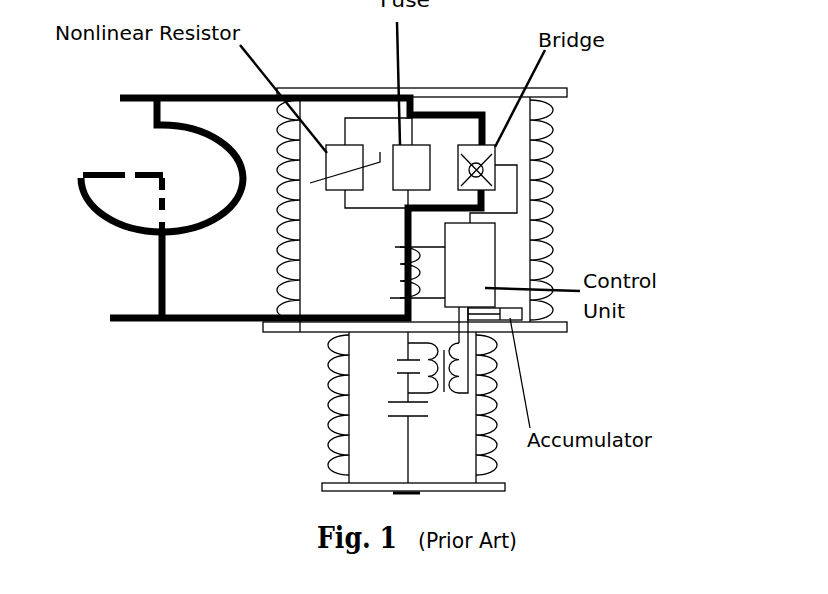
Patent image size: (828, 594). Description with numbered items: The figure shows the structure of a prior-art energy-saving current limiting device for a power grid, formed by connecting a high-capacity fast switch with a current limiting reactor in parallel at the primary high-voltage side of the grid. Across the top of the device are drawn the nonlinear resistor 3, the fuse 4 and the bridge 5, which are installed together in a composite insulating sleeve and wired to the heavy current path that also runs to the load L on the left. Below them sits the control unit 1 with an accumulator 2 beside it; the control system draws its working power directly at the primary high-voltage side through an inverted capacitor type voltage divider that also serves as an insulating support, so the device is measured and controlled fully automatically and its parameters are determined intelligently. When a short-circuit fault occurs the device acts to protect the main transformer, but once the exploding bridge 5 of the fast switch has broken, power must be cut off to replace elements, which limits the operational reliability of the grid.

The control unit 1 is at (470, 270).
The accumulator 2 is at (505, 318).
The nonlinear resistor 3 is at (332, 155).
The fuse 4 is at (422, 153).
The bridge 5 is at (472, 152).
The load L is at (162, 209).